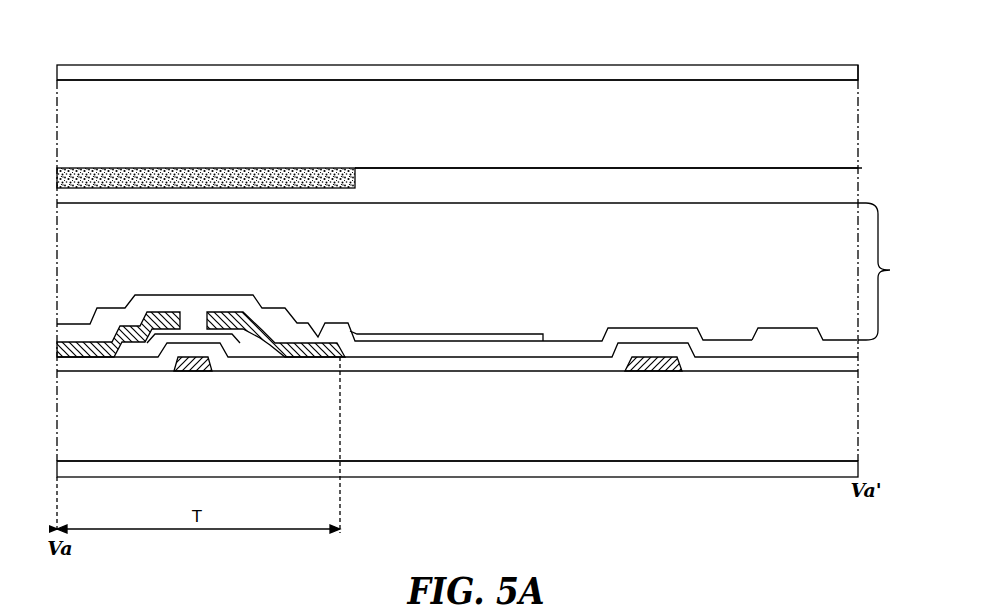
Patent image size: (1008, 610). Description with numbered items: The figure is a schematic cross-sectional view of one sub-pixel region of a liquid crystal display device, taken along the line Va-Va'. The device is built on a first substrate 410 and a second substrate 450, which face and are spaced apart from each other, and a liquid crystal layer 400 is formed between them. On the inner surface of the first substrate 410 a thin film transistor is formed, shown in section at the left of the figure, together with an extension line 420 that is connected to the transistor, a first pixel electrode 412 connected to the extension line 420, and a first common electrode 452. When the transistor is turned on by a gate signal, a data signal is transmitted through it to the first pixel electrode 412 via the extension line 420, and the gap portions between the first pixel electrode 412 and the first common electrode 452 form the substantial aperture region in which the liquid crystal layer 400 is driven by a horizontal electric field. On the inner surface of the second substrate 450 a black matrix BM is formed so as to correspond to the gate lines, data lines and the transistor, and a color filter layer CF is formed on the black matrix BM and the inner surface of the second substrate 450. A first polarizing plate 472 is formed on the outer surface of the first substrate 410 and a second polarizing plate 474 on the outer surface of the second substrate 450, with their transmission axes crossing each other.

The second polarizing plate 474 is at (437, 65).
The second substrate 450 is at (835, 124).
The color filter layer CF is at (426, 175).
The black matrix BM is at (268, 167).
The liquid crystal layer 400 is at (490, 271).
The first substrate 410 is at (805, 420).
The first polarizing plate 472 is at (465, 477).
The first common electrode 452 is at (648, 372).
The extension line 420 is at (443, 334).
The first pixel electrode 412 is at (790, 328).